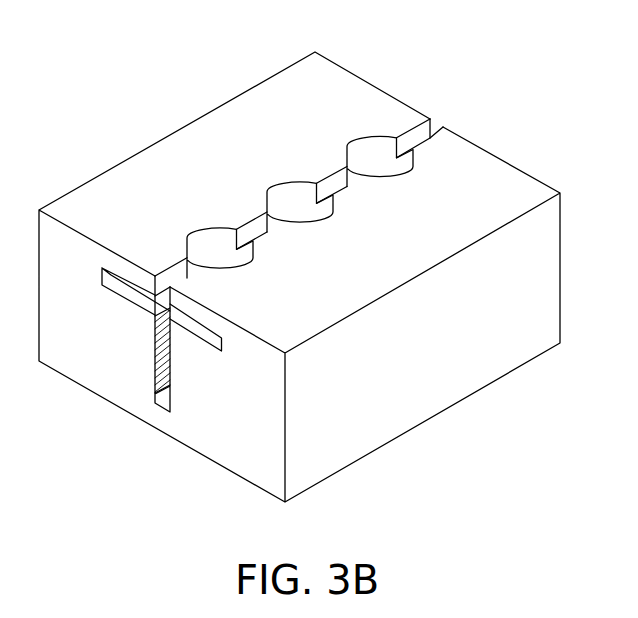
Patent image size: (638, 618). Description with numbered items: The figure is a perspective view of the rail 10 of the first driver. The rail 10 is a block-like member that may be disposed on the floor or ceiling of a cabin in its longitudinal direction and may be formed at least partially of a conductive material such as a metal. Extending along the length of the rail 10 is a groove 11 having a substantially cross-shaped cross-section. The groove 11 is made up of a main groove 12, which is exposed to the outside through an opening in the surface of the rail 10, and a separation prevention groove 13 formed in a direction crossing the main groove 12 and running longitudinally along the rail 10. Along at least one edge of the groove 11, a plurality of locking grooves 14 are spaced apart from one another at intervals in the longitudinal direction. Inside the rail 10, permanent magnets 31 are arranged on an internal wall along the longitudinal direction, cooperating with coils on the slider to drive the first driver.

The rail 10 is at (98, 66).
The groove 11 is at (223, 504).
The main groove 12 is at (173, 360).
The separation prevention groove 13 is at (201, 350).
The locking grooves 14 is at (387, 175).
The permanent magnets 31 is at (160, 344).